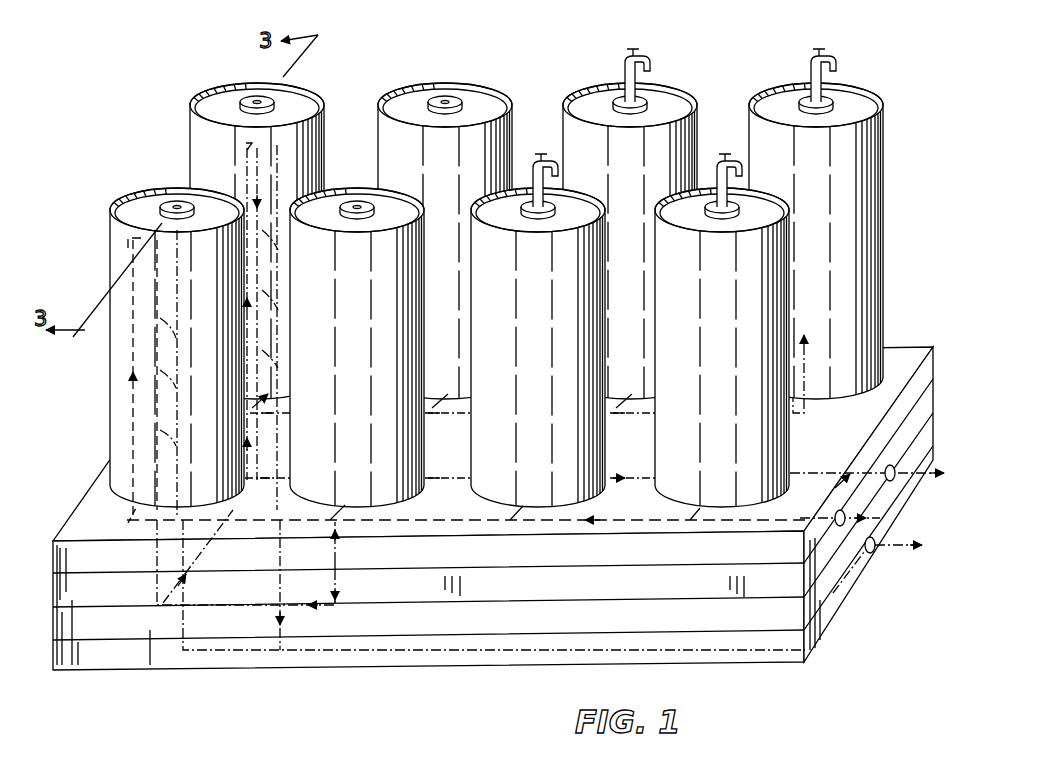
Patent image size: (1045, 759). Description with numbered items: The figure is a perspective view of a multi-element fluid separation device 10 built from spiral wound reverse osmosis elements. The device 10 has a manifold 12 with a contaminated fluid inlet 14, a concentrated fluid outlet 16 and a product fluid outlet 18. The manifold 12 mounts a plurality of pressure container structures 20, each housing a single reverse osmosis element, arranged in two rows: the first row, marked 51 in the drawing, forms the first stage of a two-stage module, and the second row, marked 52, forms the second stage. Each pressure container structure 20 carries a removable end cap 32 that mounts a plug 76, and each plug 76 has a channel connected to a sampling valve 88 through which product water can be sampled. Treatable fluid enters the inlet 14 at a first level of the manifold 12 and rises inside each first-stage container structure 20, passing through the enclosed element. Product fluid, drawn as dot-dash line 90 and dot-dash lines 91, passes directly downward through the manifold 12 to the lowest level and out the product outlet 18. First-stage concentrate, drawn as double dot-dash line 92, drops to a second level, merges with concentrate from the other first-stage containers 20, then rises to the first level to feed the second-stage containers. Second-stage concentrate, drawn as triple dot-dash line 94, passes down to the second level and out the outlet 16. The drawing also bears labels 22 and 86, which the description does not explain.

The multi-element fluid separation device 10 is at (602, 10).
The manifold 12 is at (906, 345).
The contaminated fluid inlet 14 is at (840, 510).
The concentrated fluid outlet 16 is at (890, 465).
The product fluid outlet 18 is at (870, 553).
The pressure container structure 20 is at (496, 264).
The cell top cover 22 is at (177, 194).
The removable end cap 32 is at (257, 89).
The first group of cells 51 is at (449, 330).
The second group of cells 52 is at (536, 210).
The plug 76 is at (476, 82).
The vent opening 86 is at (456, 77).
The sampling valve 88 is at (656, 61).
The product fluid flow line 90 is at (664, 520).
The separated product flow line 91 is at (180, 418).
The concentrated fluid flow line 92 is at (200, 554).
The second-stage concentrate flow line 94 is at (283, 455).